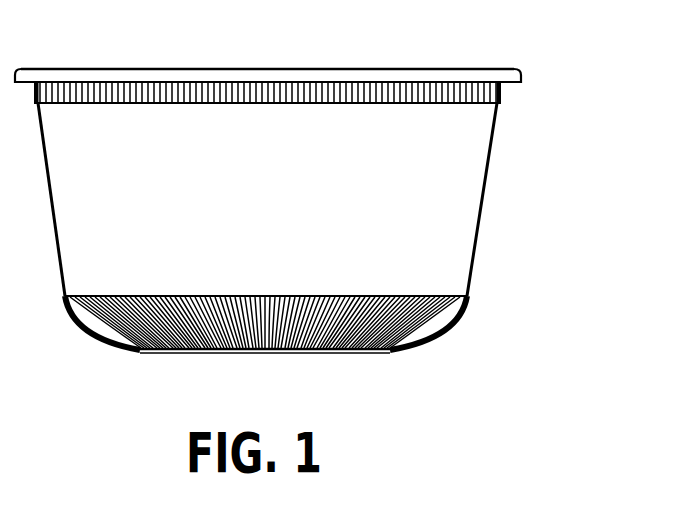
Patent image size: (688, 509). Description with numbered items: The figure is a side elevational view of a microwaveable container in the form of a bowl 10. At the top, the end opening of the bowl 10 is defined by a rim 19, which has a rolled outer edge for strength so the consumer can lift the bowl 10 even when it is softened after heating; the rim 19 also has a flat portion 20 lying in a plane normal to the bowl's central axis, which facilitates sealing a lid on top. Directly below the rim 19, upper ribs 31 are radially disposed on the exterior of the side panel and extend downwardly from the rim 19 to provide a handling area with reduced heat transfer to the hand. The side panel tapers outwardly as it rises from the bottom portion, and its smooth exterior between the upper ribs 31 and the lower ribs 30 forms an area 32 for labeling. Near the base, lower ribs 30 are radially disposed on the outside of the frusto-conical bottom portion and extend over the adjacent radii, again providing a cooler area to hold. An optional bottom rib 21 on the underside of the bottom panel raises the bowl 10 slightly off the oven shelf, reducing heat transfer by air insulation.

The bowl 10 is at (309, 213).
The rim 19 is at (294, 41).
The flat portion 20 is at (487, 70).
The upper ribs 31 is at (502, 96).
The area for labeling 32 is at (505, 108).
The lower ribs 30 is at (437, 330).
The bottom rib 21 is at (158, 350).